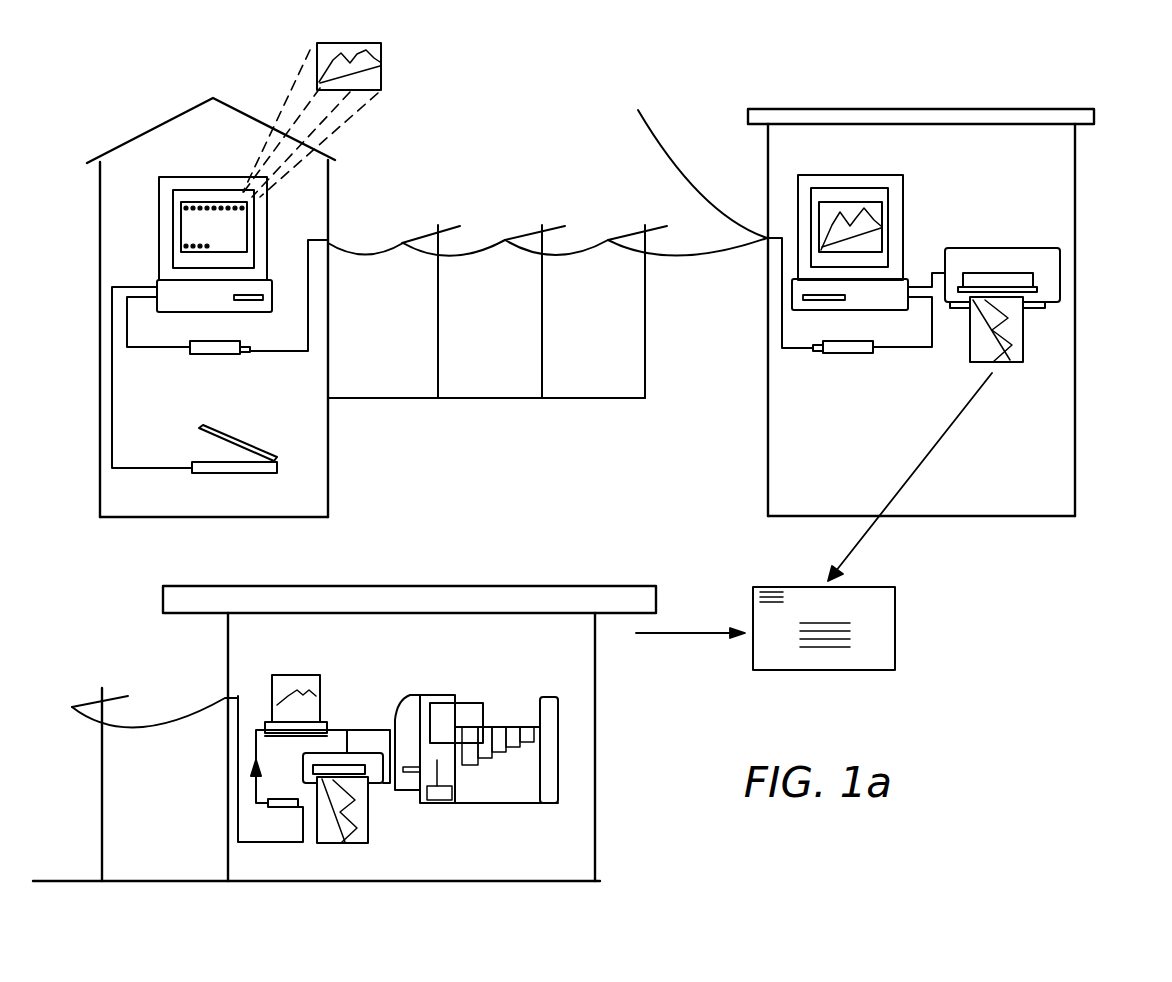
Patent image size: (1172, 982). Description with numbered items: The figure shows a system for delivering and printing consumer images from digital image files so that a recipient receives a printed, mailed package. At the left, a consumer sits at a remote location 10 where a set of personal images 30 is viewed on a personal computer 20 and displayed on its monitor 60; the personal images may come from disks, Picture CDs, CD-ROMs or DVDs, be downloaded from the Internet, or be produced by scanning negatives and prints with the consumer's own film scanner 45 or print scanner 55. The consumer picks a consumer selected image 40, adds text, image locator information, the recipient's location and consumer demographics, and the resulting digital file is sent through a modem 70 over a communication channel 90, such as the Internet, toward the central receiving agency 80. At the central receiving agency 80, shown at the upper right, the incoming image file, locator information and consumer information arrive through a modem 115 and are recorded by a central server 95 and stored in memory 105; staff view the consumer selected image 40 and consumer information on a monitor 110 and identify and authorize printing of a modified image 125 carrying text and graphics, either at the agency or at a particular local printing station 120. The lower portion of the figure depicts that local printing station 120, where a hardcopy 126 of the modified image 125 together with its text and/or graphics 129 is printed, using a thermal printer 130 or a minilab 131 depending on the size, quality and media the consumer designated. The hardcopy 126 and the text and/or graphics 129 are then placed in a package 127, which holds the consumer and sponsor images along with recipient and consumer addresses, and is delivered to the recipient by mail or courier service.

The remote location 10 is at (112, 158).
The personal computer 20 is at (272, 283).
The personal images 30 is at (247, 206).
The consumer selected image 40 is at (381, 66).
The film scanner 45 is at (250, 300).
The print scanner 55 is at (278, 466).
The monitor 60 is at (190, 203).
The modem 70 is at (195, 355).
The central receiving agency 80 is at (958, 109).
The communication channel 90 is at (473, 250).
The central server 95 is at (792, 290).
The memory 105 is at (815, 298).
The monitor 110 is at (888, 190).
The modem 115 is at (838, 355).
The local printing station 120 is at (435, 586).
The modified image 125 is at (878, 210).
The hardcopy 126 is at (1025, 334).
The package 127 is at (895, 620).
The text and/or graphics 129 is at (322, 845).
The thermal printer 130 is at (1062, 265).
The minilab 131 is at (558, 736).